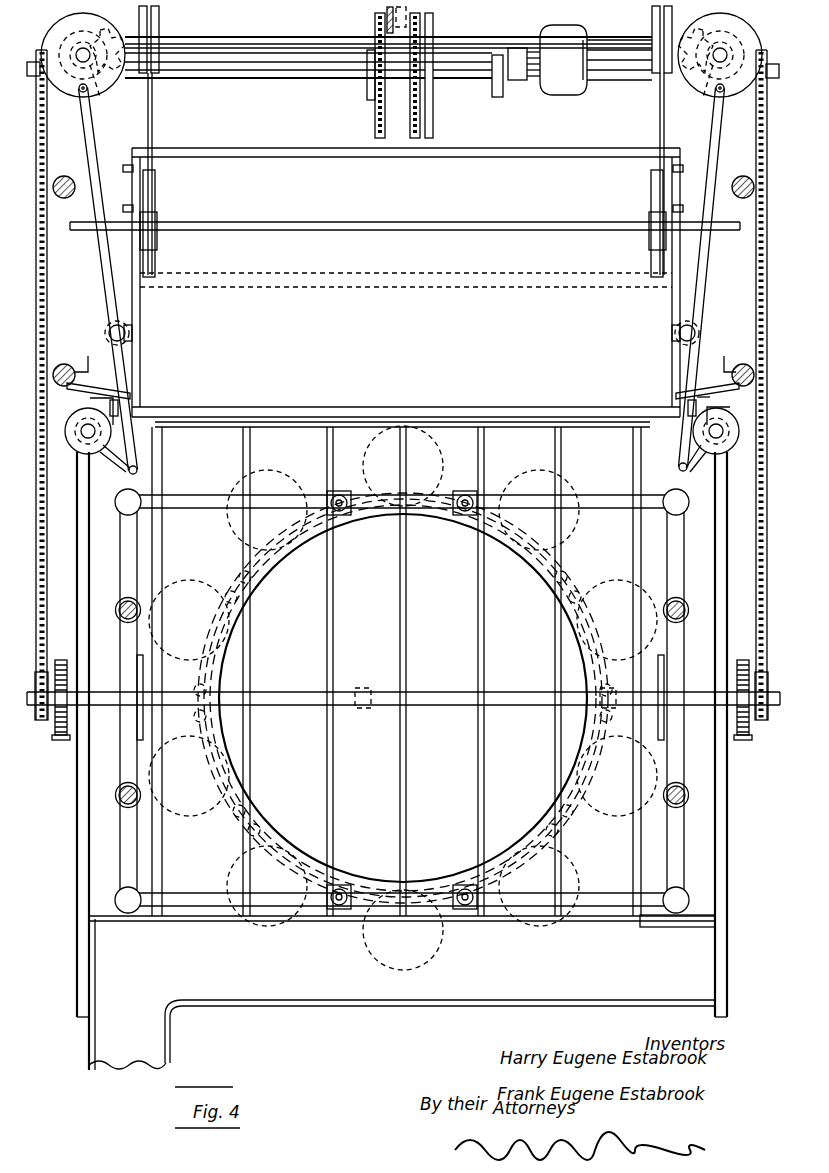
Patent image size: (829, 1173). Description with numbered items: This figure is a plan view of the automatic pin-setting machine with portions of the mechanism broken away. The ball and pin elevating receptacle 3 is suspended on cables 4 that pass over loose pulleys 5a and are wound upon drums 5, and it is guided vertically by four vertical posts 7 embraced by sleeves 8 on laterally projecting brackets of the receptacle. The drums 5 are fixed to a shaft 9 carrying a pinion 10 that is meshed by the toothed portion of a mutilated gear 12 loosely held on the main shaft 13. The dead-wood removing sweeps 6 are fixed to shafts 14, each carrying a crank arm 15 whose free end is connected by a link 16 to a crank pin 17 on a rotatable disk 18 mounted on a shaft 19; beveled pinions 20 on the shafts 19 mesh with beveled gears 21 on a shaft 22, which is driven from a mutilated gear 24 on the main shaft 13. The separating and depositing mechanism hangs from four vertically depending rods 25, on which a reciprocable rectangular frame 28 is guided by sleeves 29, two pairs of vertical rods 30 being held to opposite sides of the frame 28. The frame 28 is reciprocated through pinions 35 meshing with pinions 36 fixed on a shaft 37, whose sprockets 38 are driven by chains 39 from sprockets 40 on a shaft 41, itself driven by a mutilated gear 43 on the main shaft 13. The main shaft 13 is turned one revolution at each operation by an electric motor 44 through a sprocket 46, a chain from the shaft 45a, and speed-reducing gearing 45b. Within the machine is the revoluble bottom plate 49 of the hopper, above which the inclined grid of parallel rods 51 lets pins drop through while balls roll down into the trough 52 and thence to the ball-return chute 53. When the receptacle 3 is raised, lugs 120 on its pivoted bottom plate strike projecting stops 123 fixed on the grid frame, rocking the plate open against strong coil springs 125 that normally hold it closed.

The ball and pin elevating receptacle 3 is at (406, 282).
The cables 4 is at (153, 128).
The drums 5 is at (159, 12).
The loose pulleys 5a is at (158, 205).
The dead-wood removing sweeps 6 is at (80, 832).
The vertical posts 7 is at (64, 176).
The sleeves 8 is at (78, 196).
The shaft 9 is at (264, 42).
The pinion 10 is at (378, 40).
The mutilated gear 12 is at (376, 126).
The main shaft 13 is at (250, 82).
The shafts 14 is at (85, 430).
The crank arm 15 is at (115, 460).
The links 16 is at (104, 262).
The crank pins 17 is at (80, 92).
The rotatable disks 18 is at (55, 45).
The shafts 19 is at (83, 55).
The beveled pinions 20 is at (401, 96).
The beveled gears 21 is at (110, 65).
The shaft 22 is at (186, 48).
The mutilated gear 24 is at (413, 128).
The vertically depending rods 25 is at (124, 602).
The rectangular frame 28 is at (203, 502).
The sleeves 29 is at (122, 616).
The vertical rods 30 is at (339, 492).
The pinions 35 is at (60, 740).
The pinions 36 is at (64, 662).
The shaft 37 is at (281, 697).
The sprockets 38 is at (42, 708).
The chains 39 is at (42, 470).
The sprockets 40 is at (40, 97).
The shaft 41 is at (483, 80).
The mutilated gear 43 is at (434, 128).
The electric motor 44 is at (563, 38).
The shaft 45a is at (498, 54).
The speed-reducing gearing 45b is at (519, 66).
The sprocket 46 is at (498, 98).
The revoluble bottom plate 49 is at (403, 698).
The rods or bars 51 is at (166, 553).
The trough 52 is at (288, 985).
The ball-return track or chute 53 is at (106, 1052).
The lugs 120 is at (67, 385).
The projecting stops 123 is at (415, 406).
The coil springs 125 is at (126, 338).